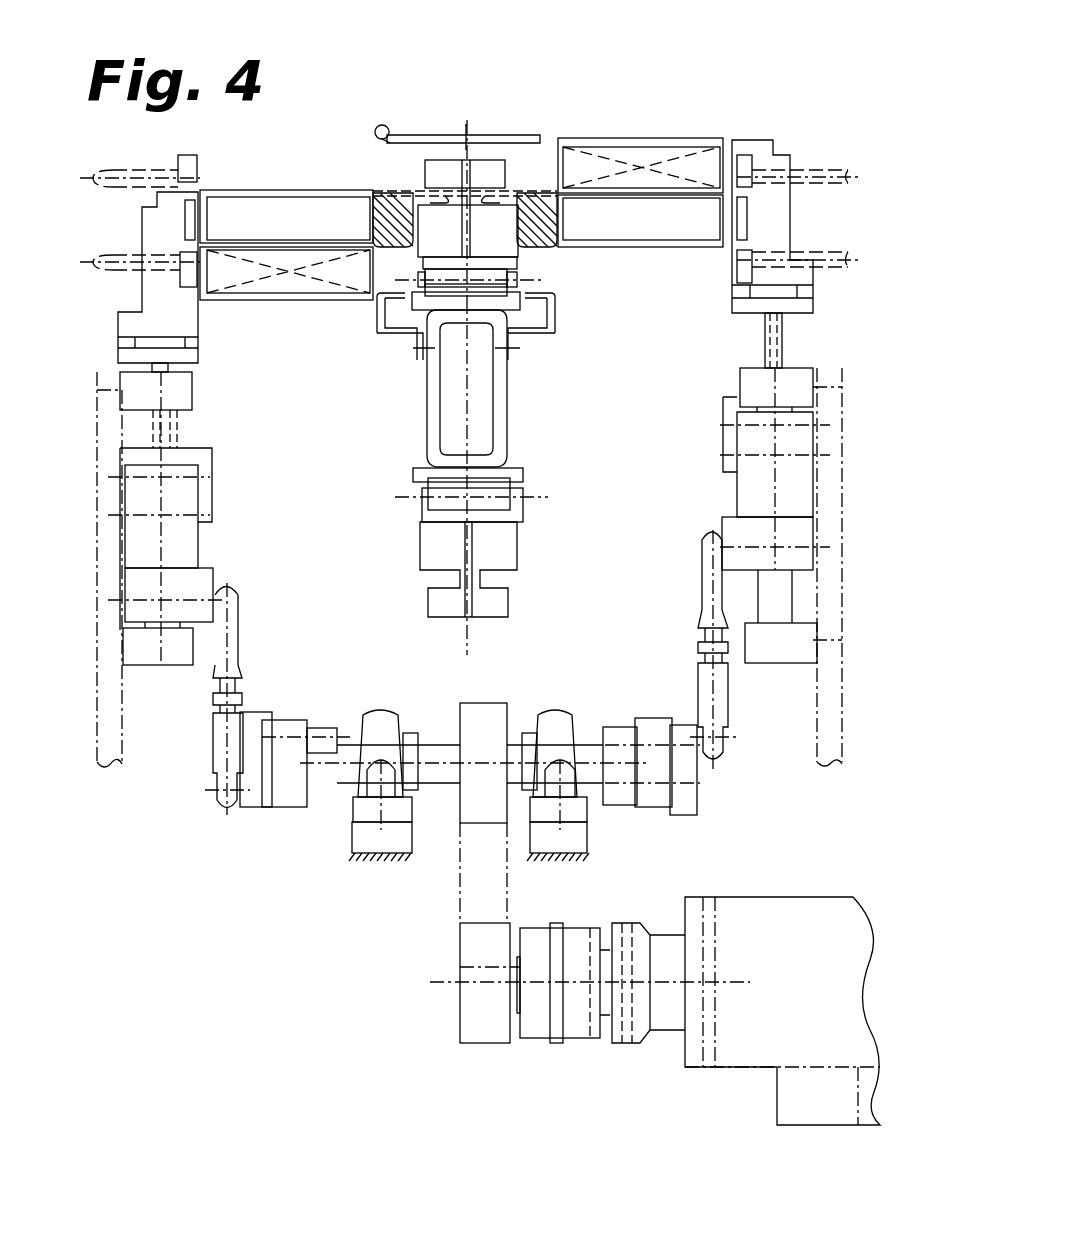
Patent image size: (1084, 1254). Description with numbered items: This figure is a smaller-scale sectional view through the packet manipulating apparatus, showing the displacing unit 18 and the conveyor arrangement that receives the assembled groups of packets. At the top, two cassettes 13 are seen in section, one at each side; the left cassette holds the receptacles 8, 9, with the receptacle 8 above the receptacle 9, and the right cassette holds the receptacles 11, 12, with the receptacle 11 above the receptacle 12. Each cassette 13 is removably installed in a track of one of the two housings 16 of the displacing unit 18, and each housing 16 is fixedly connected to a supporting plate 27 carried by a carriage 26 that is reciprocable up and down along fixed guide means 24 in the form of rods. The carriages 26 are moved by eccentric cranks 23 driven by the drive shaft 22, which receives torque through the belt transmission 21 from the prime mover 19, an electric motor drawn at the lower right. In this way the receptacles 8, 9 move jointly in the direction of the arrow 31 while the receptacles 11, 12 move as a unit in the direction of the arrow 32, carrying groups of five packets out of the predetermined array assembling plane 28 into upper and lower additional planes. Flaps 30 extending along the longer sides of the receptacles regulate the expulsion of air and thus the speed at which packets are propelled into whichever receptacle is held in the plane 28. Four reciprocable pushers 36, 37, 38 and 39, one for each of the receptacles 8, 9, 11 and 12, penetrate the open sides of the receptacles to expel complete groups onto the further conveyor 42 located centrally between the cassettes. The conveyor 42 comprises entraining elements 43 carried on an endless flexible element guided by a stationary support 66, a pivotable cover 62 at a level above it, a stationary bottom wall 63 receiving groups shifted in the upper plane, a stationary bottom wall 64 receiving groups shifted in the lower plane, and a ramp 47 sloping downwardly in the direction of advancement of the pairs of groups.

The receptacle 8 is at (268, 190).
The receptacle 9 is at (240, 298).
The receptacle 11 is at (587, 138).
The receptacle 12 is at (658, 248).
The cassette 13 is at (750, 138).
The housing 16 is at (140, 225).
The displacing unit 18 is at (372, 898).
The prime mover 19 is at (592, 1040).
The belt transmission 21 is at (510, 910).
The drive shaft 22 is at (440, 743).
The eccentric crank 23 is at (698, 593).
The fixed guide means 24 is at (792, 612).
The carriage 26 is at (723, 515).
The supporting plate 27 is at (120, 358).
The array assembling plane 28 is at (810, 217).
The flap 30 is at (747, 225).
The arrow 31 is at (292, 317).
The arrow 32 is at (637, 290).
The pusher 36 is at (190, 153).
The pusher 37 is at (187, 287).
The pusher 38 is at (742, 150).
The pusher 39 is at (740, 287).
The further conveyor 42 is at (550, 376).
The entraining element 43 is at (507, 170).
The ramp 47 is at (538, 235).
The pivotable cover 62 is at (417, 133).
The stationary bottom wall 63 is at (408, 193).
The stationary bottom wall 64 is at (398, 295).
The stationary support 66 is at (427, 408).